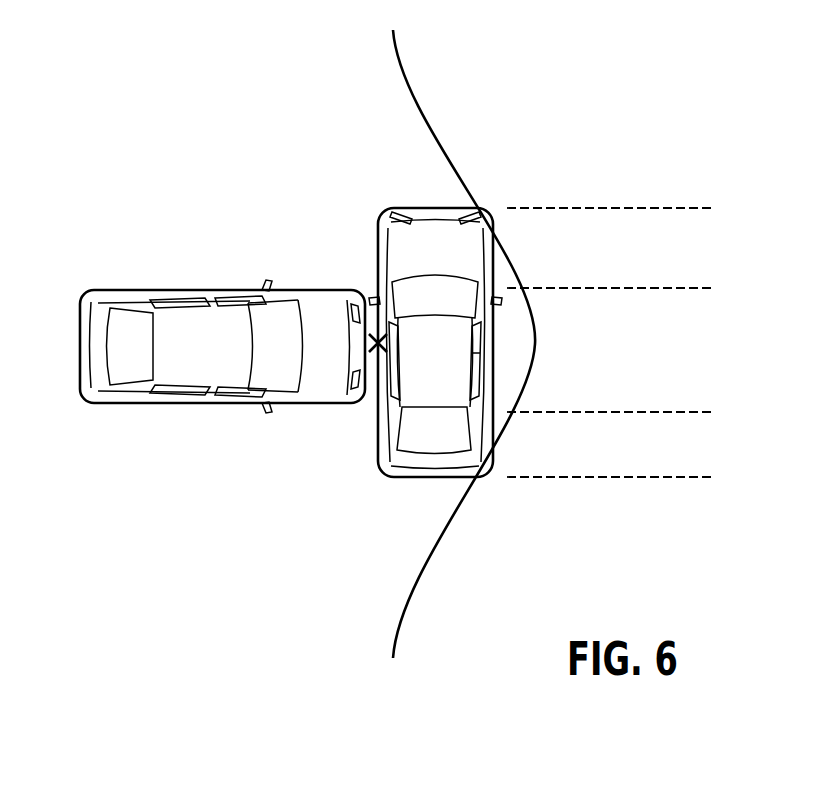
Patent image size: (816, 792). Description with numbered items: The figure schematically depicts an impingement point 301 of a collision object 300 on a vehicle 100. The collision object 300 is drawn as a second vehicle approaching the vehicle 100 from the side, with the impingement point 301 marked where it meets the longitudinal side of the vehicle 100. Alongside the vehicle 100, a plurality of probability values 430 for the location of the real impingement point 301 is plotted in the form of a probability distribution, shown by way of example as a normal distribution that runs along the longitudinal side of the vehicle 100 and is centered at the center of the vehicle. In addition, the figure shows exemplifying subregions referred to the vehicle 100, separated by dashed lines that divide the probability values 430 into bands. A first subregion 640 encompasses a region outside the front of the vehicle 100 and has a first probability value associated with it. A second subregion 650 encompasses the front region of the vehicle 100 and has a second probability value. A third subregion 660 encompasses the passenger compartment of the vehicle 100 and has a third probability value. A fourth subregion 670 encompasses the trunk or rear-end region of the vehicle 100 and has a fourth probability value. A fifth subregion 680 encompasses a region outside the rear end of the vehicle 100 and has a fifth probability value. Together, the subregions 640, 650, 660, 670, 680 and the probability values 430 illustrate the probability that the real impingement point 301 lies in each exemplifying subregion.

The vehicle 100 is at (377, 228).
The collision object 300 is at (200, 288).
The impingement point 301 is at (372, 353).
The probability values 430 is at (401, 68).
The first subregion 640 is at (610, 183).
The second subregion 650 is at (610, 261).
The third subregion 660 is at (610, 373).
The fourth subregion 670 is at (610, 453).
The fifth subregion 680 is at (610, 504).